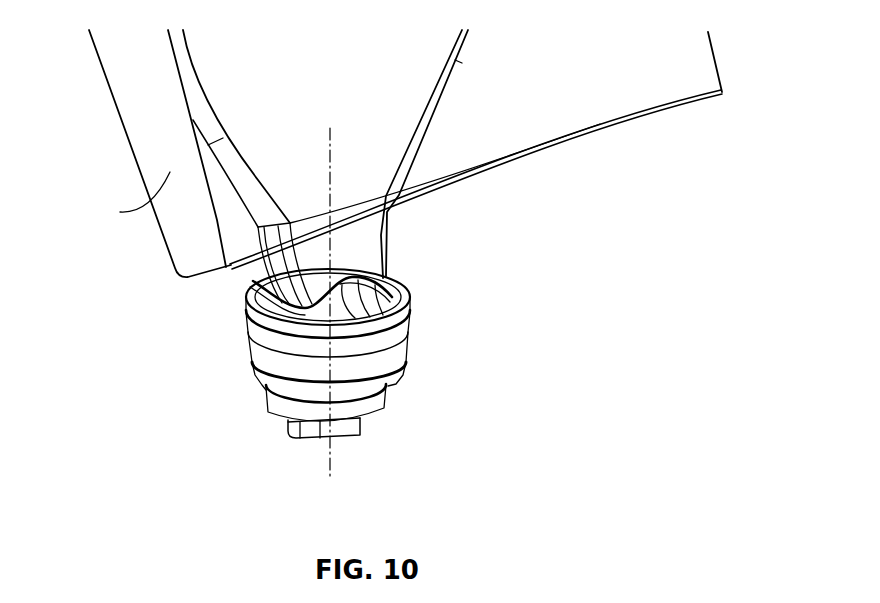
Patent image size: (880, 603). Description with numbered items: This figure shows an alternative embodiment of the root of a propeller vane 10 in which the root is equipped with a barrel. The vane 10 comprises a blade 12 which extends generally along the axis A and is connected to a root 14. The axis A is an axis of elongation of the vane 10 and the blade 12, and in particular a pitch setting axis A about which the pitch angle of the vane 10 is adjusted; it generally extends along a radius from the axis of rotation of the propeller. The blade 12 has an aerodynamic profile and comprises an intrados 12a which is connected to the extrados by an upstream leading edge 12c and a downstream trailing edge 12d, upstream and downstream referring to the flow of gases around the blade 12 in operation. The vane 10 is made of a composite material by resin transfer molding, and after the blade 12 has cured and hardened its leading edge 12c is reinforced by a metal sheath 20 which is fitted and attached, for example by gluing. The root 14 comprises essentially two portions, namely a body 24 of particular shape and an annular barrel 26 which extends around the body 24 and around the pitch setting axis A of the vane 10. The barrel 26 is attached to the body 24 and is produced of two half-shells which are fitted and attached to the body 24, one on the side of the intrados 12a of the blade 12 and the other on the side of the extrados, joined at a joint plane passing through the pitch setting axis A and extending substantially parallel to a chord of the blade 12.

The vane 10 is at (750, 214).
The blade 12 is at (530, 164).
The intrados 12a is at (630, 78).
The leading edge 12c is at (128, 145).
The trailing edge 12d is at (716, 58).
The root 14 is at (215, 353).
The metal sheath 20 is at (129, 199).
The body 24 is at (368, 265).
The annular barrel 26 is at (293, 390).
The pitch setting axis A is at (330, 458).